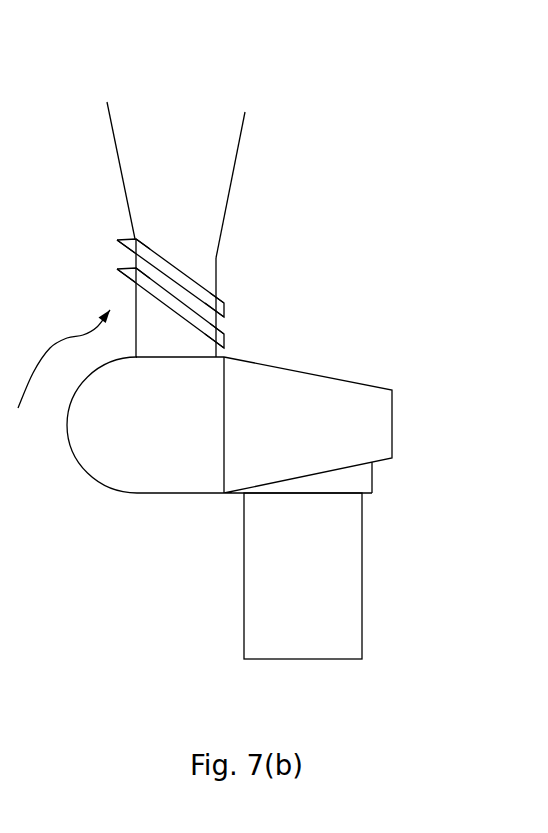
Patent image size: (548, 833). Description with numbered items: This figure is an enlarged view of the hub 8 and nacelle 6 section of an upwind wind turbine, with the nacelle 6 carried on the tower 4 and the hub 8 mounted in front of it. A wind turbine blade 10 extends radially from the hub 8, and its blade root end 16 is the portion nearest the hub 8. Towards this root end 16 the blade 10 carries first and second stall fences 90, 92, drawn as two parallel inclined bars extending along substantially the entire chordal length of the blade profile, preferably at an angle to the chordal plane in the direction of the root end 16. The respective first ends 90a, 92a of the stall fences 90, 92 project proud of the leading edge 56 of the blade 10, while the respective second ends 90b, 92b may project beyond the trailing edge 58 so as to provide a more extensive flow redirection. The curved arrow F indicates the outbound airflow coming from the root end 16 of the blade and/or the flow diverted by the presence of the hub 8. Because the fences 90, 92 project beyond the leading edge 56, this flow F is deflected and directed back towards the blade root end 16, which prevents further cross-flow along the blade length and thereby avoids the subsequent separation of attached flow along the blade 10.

The wind turbine blade 10 is at (235, 92).
The trailing edge 58 is at (263, 122).
The leading edge 56 is at (108, 141).
The first stall fence 90 is at (162, 264).
The first end of first stall fence 90a is at (128, 238).
The second end of first stall fence 90b is at (226, 300).
The second stall fence 92 is at (186, 303).
The first end of second stall fence 92a is at (117, 269).
The second end of second stall fence 92b is at (226, 336).
The arrow F is at (61, 382).
The blade root end 16 is at (148, 358).
The hub 8 is at (175, 467).
The nacelle 6 is at (345, 442).
The tower 4 is at (287, 582).